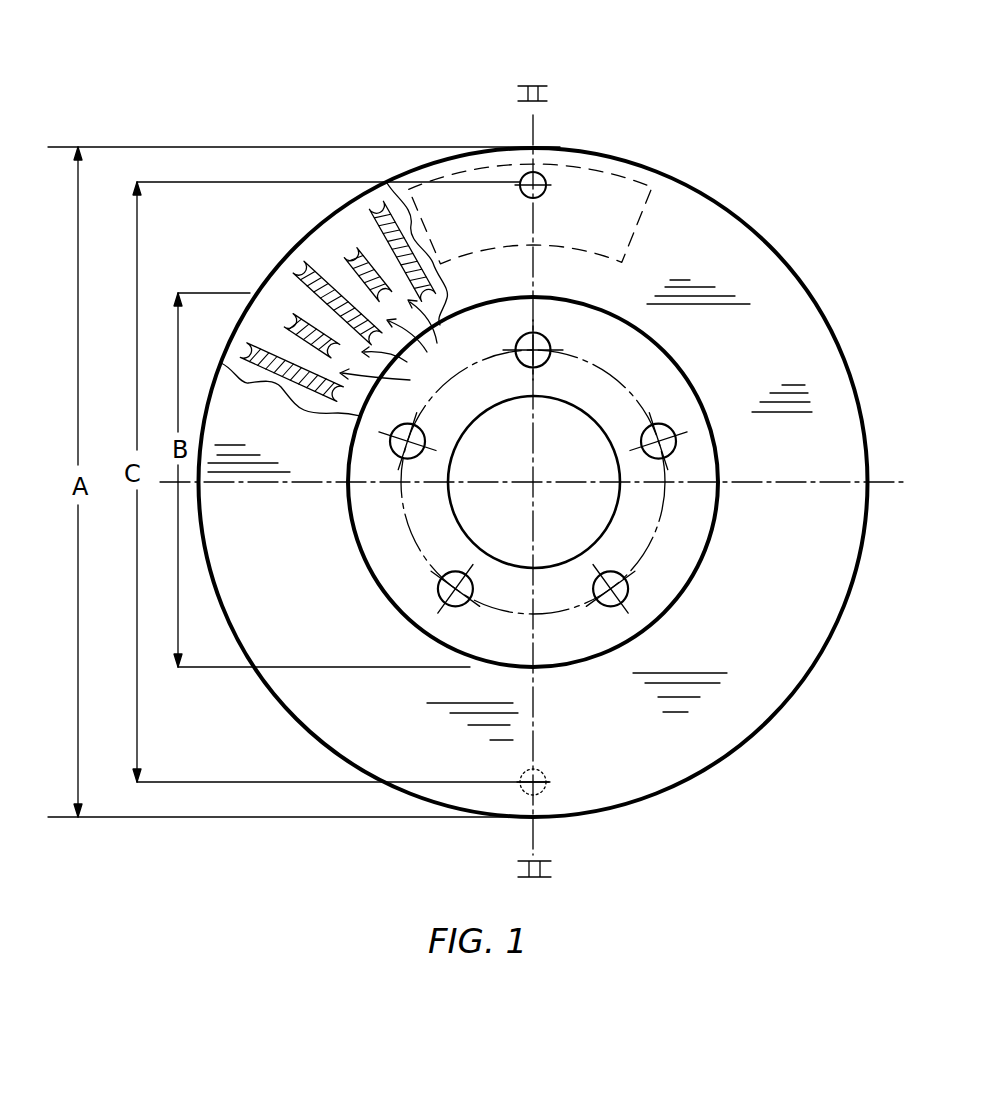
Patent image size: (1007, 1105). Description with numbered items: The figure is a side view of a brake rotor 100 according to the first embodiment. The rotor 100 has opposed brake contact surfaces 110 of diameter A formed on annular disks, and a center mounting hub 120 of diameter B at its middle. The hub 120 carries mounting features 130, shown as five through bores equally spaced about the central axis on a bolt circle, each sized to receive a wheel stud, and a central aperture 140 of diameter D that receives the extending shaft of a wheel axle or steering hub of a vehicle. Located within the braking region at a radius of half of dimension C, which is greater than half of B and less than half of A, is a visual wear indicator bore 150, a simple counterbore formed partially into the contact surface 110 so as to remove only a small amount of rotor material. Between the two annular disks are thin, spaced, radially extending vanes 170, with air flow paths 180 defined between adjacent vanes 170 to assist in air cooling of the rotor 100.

The brake rotor 100 is at (632, 132).
The brake contact surfaces 110 is at (737, 253).
The center mounting hub 120 is at (605, 337).
The mounting features 130 is at (537, 330).
The central aperture 140 is at (609, 505).
The visual wear indicator bore 150 is at (527, 173).
The vanes 170 is at (258, 343).
The air flow paths 180 is at (407, 362).